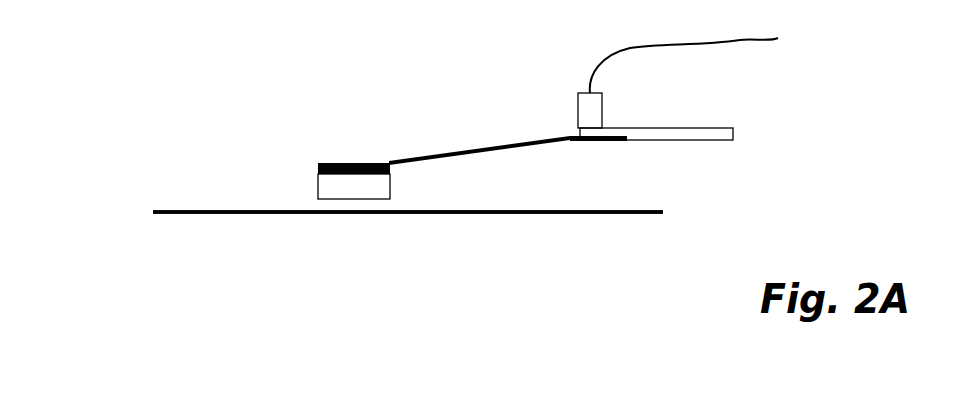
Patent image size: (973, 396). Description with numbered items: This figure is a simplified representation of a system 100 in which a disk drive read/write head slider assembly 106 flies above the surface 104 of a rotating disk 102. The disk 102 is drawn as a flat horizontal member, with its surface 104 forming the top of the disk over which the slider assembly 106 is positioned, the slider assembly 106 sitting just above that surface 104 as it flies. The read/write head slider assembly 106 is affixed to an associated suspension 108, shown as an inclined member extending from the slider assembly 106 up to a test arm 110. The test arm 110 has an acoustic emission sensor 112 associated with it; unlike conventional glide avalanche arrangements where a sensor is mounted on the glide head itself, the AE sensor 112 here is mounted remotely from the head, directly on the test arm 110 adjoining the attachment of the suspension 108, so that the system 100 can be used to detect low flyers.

The system 100 is at (705, 272).
The rotating disk 102 is at (283, 260).
The surface of the rotating disk 104 is at (225, 211).
The read/write head slider assembly 106 is at (278, 181).
The suspension 108 is at (462, 149).
The test arm 110 is at (668, 128).
The acoustic emission (AE) sensor 112 is at (578, 113).